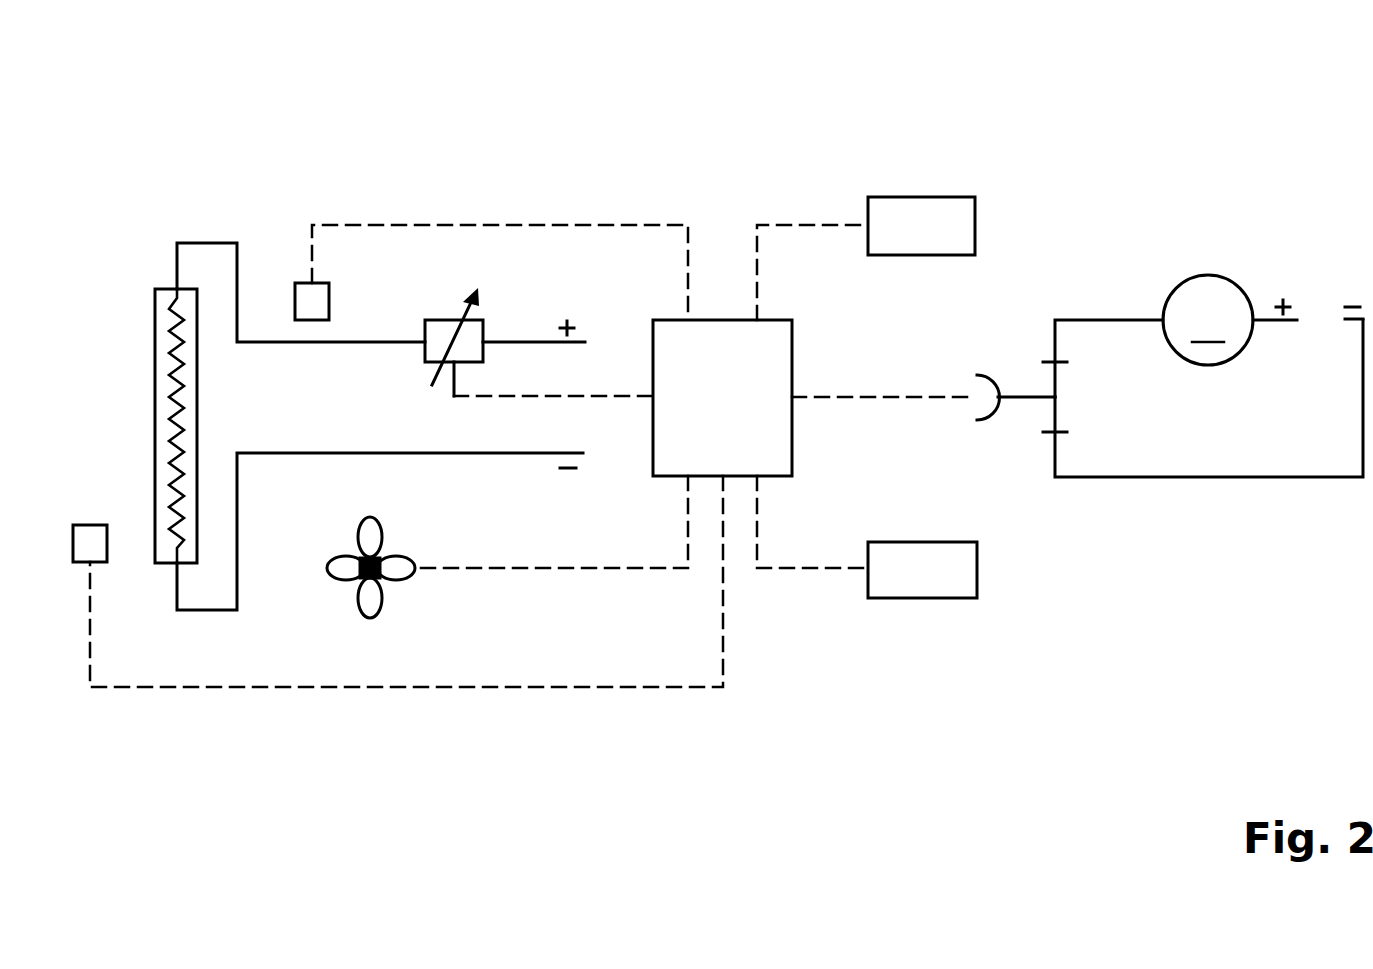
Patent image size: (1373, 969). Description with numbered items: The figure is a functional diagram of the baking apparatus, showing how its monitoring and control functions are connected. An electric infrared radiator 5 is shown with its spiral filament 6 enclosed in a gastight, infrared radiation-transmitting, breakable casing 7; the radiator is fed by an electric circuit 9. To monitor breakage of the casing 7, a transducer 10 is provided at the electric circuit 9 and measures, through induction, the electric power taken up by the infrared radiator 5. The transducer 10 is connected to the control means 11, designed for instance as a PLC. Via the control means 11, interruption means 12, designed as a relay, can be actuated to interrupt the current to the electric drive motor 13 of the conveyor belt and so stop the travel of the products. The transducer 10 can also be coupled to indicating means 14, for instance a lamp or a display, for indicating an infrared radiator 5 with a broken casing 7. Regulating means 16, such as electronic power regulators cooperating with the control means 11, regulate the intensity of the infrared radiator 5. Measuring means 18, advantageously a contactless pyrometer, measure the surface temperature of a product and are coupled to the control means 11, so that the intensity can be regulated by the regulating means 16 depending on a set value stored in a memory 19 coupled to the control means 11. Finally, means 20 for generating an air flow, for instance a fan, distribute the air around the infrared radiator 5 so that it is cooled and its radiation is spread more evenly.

The electric infrared radiator 5 is at (153, 258).
The spiral filament 6 is at (167, 330).
The casing 7 is at (156, 370).
The electric circuit 9 is at (217, 242).
The transducer 10 is at (311, 305).
The control means 11 is at (709, 414).
The interruption means 12 is at (1025, 394).
The electric drive motor 13 is at (1228, 292).
The indicating means 14 is at (906, 586).
The regulating means 16 is at (437, 350).
The measuring means 18 is at (88, 545).
The memory 19 is at (906, 242).
The means for generating an air flow 20 is at (372, 538).